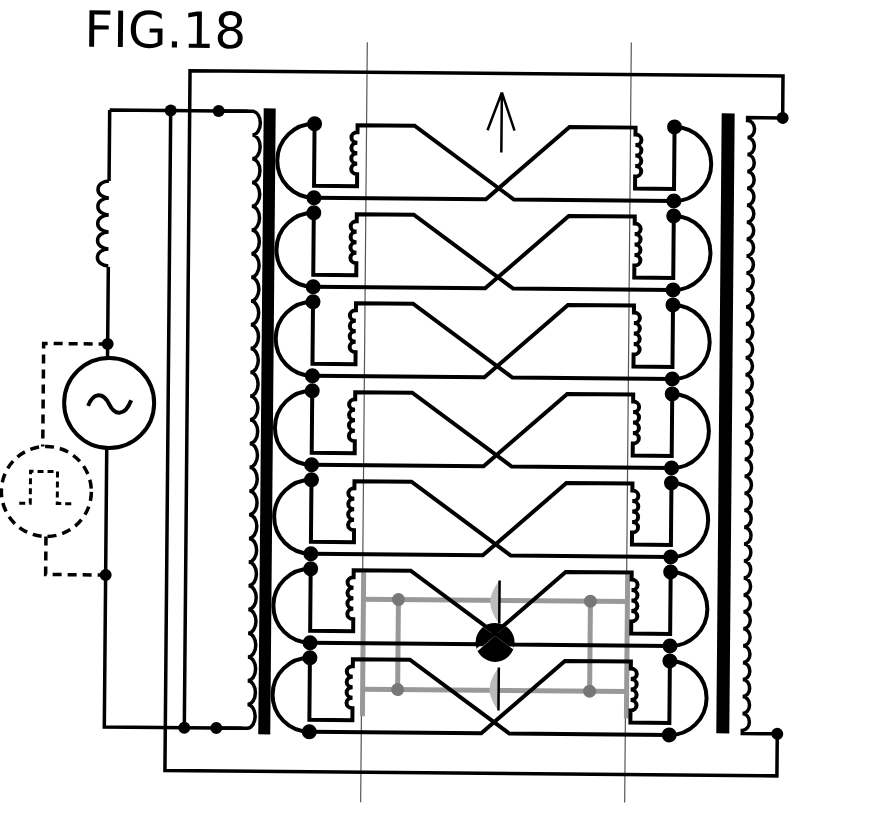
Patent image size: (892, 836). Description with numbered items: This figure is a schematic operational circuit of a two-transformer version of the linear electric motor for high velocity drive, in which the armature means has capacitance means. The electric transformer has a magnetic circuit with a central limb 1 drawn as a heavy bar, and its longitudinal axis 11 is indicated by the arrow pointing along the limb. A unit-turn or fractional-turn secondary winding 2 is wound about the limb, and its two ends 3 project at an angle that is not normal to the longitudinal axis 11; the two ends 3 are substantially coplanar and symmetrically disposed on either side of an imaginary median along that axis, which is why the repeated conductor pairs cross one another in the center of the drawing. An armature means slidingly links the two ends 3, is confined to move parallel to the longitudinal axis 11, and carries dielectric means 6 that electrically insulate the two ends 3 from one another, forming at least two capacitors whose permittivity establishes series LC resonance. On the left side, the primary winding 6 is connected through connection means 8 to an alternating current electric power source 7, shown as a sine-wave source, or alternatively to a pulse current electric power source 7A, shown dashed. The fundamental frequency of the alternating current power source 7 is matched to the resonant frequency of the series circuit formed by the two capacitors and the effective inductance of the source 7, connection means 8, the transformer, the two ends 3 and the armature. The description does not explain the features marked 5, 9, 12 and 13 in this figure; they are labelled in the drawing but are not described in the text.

The central limb 1 is at (249, 734).
The secondary winding 2 is at (277, 722).
The two ends 3 is at (358, 443).
The resonant element with capacitor plate 5 is at (497, 712).
The dielectric means 6 is at (243, 614).
The alternating current electric power source 7 is at (92, 385).
The pulse current electric power source 7A is at (35, 525).
The connection means 8 is at (127, 732).
The inductor 9 is at (97, 212).
The longitudinal axis 11 is at (542, 119).
The boundary line 12 is at (628, 65).
The crossover conductors 13 is at (512, 530).